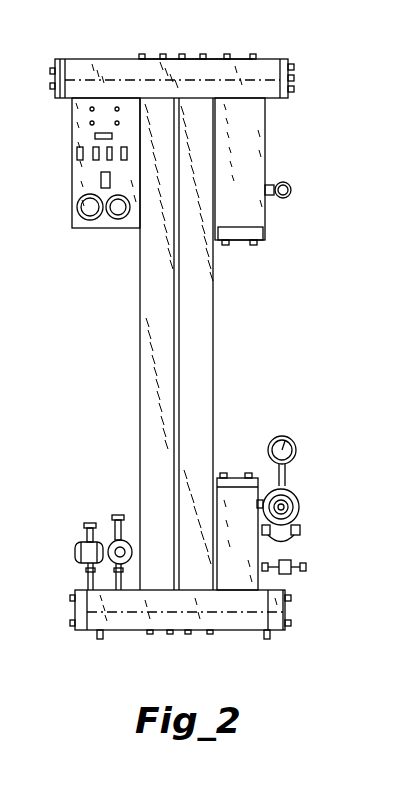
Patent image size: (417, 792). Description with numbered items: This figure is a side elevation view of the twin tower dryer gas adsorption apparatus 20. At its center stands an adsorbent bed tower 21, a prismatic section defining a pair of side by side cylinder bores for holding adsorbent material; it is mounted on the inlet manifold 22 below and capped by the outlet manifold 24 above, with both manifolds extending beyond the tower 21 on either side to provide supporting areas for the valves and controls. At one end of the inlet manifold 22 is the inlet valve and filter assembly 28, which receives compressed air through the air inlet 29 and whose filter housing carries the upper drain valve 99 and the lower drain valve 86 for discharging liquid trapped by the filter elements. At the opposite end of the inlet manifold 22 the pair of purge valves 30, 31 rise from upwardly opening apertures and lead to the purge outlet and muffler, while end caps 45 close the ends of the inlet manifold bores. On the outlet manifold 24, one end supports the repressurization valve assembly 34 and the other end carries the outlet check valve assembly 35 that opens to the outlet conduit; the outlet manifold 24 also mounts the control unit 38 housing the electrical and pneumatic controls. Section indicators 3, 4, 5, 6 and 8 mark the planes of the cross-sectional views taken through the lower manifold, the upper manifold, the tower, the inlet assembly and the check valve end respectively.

The twin tower dryer gas adsorption apparatus 20 is at (200, 41).
The adsorbent bed tower 21 is at (214, 316).
The inlet manifold 22 is at (170, 634).
The outlet manifold 24 is at (112, 56).
The inlet valve and filter assembly 28 is at (227, 602).
The air inlet 29 is at (290, 457).
The purge valve 30 is at (110, 541).
The purge valve 31 is at (75, 551).
The repressurization valve assembly 34 is at (53, 70).
The outlet check valve assembly 35 is at (263, 135).
The control unit 38 is at (96, 229).
The end cap 45 is at (73, 626).
The drain valve 86 is at (291, 562).
The drain valve 99 is at (296, 531).
The section line 3- 3 is at (68, 613).
The section line 4- 4 is at (53, 80).
The section line 5- 5 is at (235, 337).
The section line 6- 6 is at (235, 497).
The section line 8- 8 is at (238, 273).